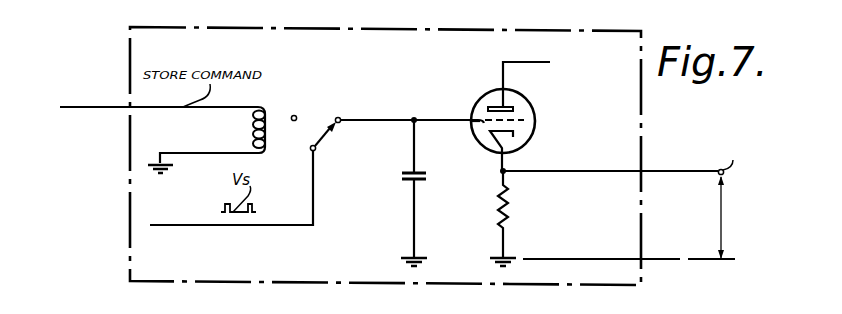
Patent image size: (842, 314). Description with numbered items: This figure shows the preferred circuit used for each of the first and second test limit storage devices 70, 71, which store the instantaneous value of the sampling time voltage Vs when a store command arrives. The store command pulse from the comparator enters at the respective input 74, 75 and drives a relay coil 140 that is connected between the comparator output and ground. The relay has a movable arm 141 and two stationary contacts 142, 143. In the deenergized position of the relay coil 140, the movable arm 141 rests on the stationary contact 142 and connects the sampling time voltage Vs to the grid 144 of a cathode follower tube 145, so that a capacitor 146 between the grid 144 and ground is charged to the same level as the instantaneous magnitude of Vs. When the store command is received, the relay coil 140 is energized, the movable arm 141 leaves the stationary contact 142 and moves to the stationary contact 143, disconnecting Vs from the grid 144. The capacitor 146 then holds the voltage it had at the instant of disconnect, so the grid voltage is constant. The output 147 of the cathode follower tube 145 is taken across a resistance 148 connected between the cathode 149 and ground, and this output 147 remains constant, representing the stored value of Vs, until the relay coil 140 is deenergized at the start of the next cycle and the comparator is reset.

The first test limit storage device 70 is at (348, 156).
The second test limit storage device 71 is at (124, 142).
The input 74 is at (157, 92).
The input 75 is at (92, 94).
The relay coil 140 is at (265, 112).
The movable arm 141 is at (324, 137).
The stationary contact 142 is at (339, 117).
The stationary contact 143 is at (295, 115).
The grid 144 is at (478, 112).
The cathode follower tube 145 is at (535, 108).
The capacitor 146 is at (404, 175).
The output 147 is at (723, 228).
The resistance 148 is at (505, 218).
The cathode 149 is at (514, 142).